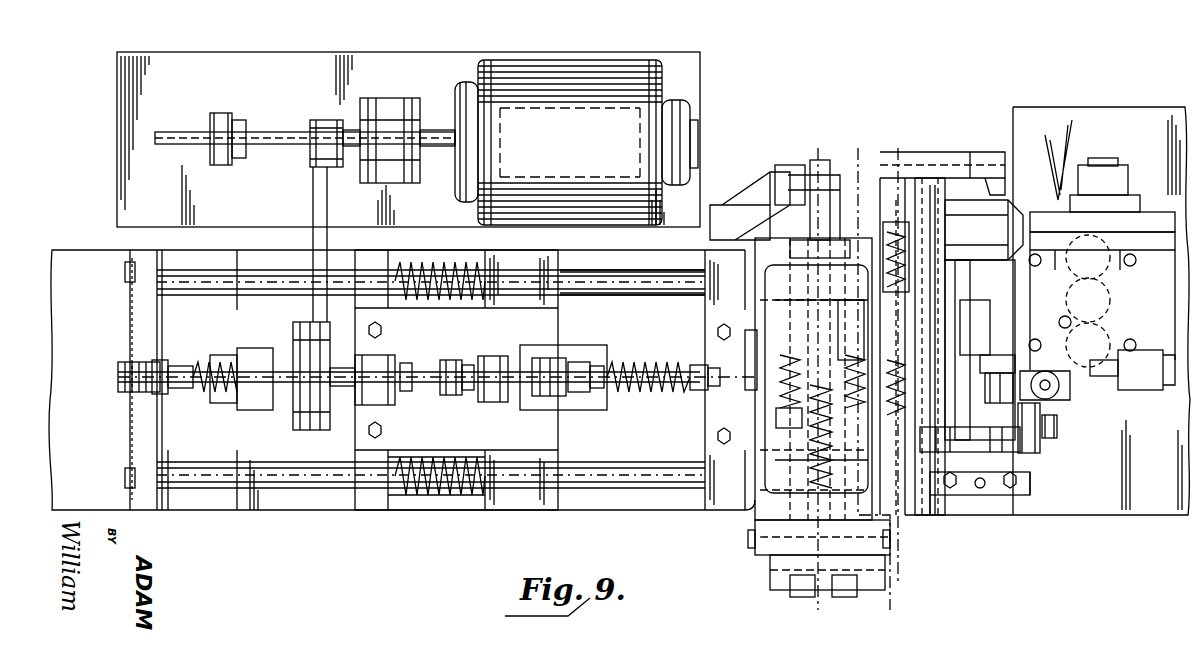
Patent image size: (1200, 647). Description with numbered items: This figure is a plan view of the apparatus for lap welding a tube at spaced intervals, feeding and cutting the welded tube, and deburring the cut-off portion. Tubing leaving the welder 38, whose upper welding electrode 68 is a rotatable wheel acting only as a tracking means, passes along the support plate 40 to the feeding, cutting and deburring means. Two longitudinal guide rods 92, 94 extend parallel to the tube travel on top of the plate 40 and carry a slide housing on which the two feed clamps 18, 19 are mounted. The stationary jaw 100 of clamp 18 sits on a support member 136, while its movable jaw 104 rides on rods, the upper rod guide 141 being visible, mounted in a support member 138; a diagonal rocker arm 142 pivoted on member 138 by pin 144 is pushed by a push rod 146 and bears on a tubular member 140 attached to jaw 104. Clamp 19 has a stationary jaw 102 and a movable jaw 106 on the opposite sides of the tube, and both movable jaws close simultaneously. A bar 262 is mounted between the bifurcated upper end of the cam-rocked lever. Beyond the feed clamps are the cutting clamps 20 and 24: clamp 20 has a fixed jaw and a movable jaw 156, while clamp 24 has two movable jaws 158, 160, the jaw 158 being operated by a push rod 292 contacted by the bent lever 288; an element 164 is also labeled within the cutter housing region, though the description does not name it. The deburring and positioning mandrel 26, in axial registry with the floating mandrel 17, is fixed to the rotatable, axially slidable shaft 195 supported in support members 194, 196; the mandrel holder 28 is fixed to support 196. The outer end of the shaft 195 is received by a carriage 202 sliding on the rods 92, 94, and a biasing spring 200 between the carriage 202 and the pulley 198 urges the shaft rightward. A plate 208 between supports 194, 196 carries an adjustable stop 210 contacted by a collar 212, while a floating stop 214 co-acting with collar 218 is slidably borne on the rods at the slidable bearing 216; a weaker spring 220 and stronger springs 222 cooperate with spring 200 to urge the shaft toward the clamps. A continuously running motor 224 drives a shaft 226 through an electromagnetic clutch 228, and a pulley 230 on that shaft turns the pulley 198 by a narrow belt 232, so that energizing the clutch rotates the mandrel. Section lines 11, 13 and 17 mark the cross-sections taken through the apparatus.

The section line 11 is at (900, 143).
The section line 13 is at (875, 150).
The floating mandrel 17 is at (810, 153).
The clamp 18 is at (1030, 372).
The clamp 19 is at (932, 385).
The clamp 20 is at (990, 455).
The clamp 24 is at (821, 436).
The deburring and positioning mandrel 26 is at (770, 385).
The mandrel housing or holder 28 is at (745, 430).
The welder 38 is at (1120, 262).
The support plate 40 is at (612, 265).
The upper welding electrode 68 is at (1108, 390).
The longitudinal rod or guide 92 is at (655, 492).
The longitudinal rod or guide 94 is at (652, 272).
The stationary jaw 100 is at (995, 315).
The stationary jaw 102 is at (913, 346).
The movable jaw 104 is at (985, 388).
The movable jaw 106 is at (888, 355).
The support member 136 is at (965, 312).
The support member 138 is at (980, 490).
The tubular member 140 is at (1010, 455).
The upper rod guide 141 is at (1015, 430).
The rocker arm 142 is at (1030, 490).
The pin 144 is at (955, 500).
The push rod 146 is at (987, 361).
The movable jaw 156 is at (848, 450).
The clamp jaw 158 is at (790, 356).
The clamp jaw 160 is at (782, 421).
The rod 164 is at (836, 312).
The support member 194 is at (380, 358).
The rotatable and axially slidable shaft 195 is at (342, 368).
The support member 196 is at (702, 392).
The pulley 198 is at (293, 425).
The biasing spring 200 is at (262, 402).
The carriage 202 is at (158, 394).
The plate 208 is at (510, 445).
The adjustable stop 210 is at (446, 398).
The collar 212 is at (406, 395).
The floating stop 214 is at (545, 410).
The slidable bearing 216 is at (530, 265).
The collar 218 is at (590, 405).
The spring 220 is at (636, 395).
The spring 222 is at (458, 262).
The motor 224 is at (585, 70).
The shaft 226 is at (155, 136).
The electromagnetic clutch 228 is at (392, 98).
The pulley 230 is at (338, 120).
The narrow belt 232 is at (313, 204).
The bar 262 is at (968, 152).
The lever 288 is at (755, 188).
The push rod 292 is at (810, 209).